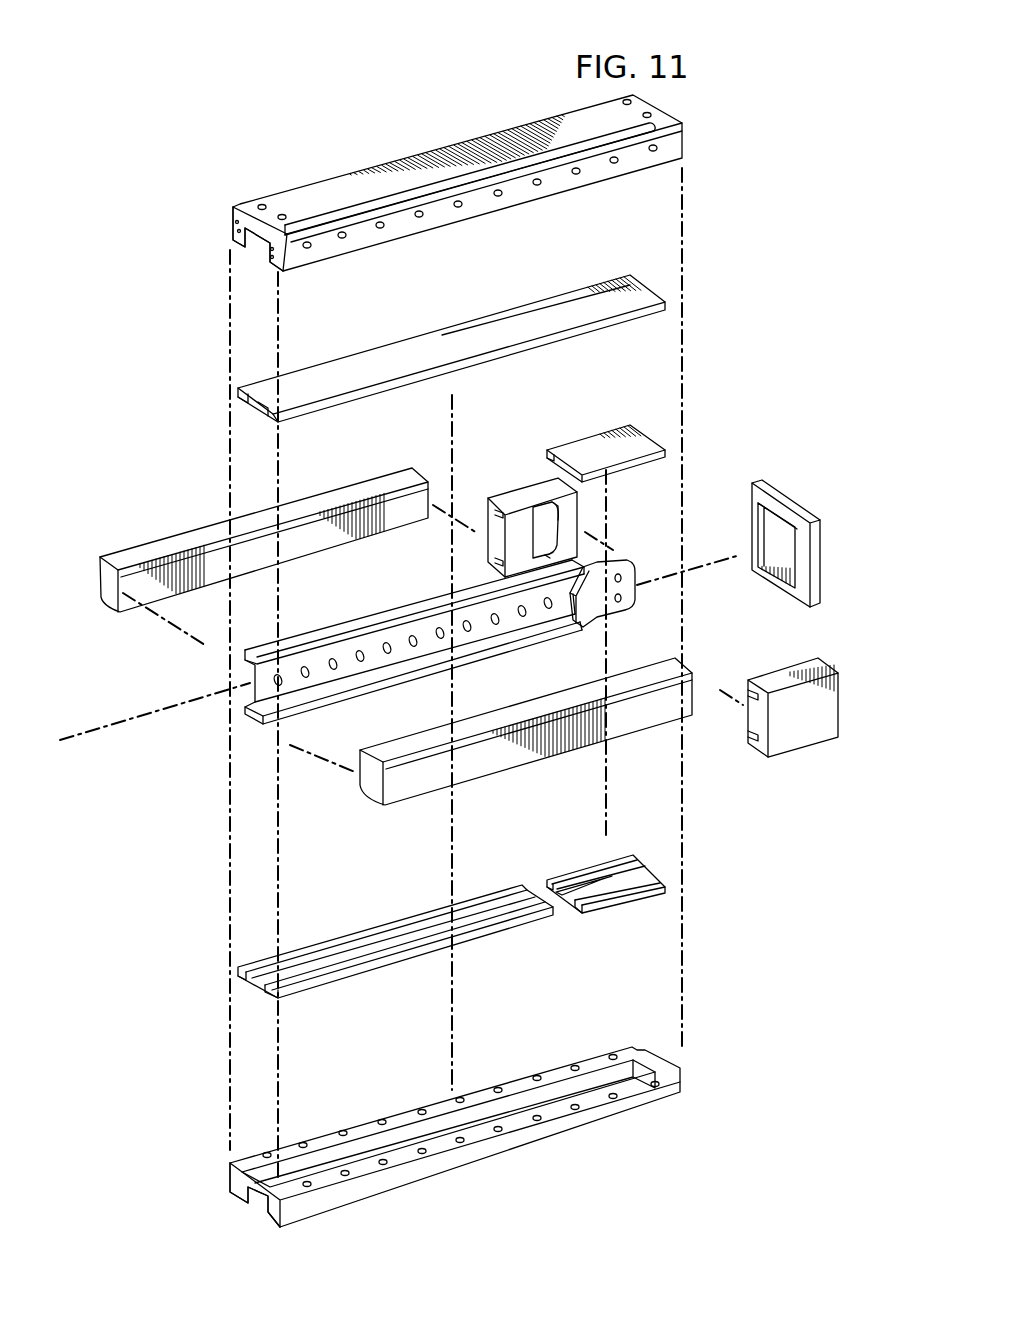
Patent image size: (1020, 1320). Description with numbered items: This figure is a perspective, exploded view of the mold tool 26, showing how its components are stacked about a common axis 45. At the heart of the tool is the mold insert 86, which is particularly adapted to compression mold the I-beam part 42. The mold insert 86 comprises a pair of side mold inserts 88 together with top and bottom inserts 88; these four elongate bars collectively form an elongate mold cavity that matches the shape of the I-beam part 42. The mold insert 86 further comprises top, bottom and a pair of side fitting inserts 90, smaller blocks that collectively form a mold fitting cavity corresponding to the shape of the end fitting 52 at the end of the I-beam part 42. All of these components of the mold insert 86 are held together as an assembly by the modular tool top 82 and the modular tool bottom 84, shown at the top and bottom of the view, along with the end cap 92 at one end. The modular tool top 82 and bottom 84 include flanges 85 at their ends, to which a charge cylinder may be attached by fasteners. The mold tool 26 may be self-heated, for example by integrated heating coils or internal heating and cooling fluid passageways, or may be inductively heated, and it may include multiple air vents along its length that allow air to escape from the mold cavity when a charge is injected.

The mold tool 26 is at (313, 58).
The I-beam part 42 is at (381, 615).
The axis 45 is at (128, 716).
The end fitting 52 is at (625, 553).
The modular top 82 is at (326, 194).
The modular bottom 84 is at (500, 1152).
The flanges 85 is at (232, 214).
The mold insert 86 is at (112, 526).
The side, top and bottom inserts 88 is at (356, 366).
The fitting inserts 90 is at (530, 493).
The end cap 92 is at (790, 497).